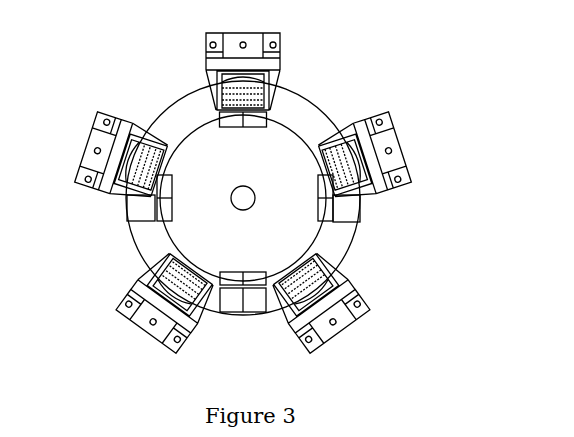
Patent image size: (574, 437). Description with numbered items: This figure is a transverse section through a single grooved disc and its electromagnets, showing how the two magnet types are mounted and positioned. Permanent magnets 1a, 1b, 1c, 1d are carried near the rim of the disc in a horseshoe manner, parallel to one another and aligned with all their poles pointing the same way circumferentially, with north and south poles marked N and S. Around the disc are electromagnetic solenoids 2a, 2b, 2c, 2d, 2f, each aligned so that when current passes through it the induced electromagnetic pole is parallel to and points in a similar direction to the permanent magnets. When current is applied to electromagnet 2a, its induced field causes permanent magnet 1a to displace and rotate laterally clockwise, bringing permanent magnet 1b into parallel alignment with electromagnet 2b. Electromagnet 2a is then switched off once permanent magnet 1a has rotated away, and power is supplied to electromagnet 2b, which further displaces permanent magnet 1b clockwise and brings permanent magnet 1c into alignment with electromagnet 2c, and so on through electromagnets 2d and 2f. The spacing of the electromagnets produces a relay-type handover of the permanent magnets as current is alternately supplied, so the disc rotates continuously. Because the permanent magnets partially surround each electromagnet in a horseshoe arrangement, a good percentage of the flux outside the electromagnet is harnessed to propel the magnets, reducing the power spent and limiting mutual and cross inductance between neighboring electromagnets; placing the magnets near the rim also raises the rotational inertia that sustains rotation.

The permanent magnet 1a is at (233, 117).
The permanent magnet 1b is at (165, 207).
The permanent magnet 1c is at (233, 299).
The permanent magnet 1d is at (340, 207).
The electromagnetic solenoid 2a is at (250, 98).
The electromagnetic solenoid 2b is at (158, 158).
The electromagnetic solenoid 2c is at (188, 282).
The electromagnetic solenoid 2d is at (305, 278).
The electromagnetic solenoid 2f is at (338, 175).